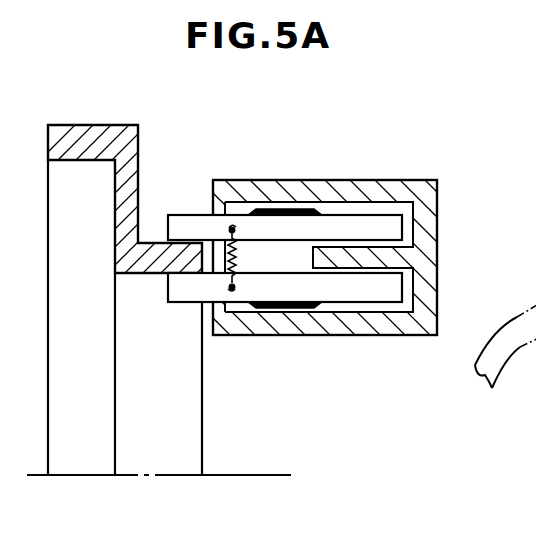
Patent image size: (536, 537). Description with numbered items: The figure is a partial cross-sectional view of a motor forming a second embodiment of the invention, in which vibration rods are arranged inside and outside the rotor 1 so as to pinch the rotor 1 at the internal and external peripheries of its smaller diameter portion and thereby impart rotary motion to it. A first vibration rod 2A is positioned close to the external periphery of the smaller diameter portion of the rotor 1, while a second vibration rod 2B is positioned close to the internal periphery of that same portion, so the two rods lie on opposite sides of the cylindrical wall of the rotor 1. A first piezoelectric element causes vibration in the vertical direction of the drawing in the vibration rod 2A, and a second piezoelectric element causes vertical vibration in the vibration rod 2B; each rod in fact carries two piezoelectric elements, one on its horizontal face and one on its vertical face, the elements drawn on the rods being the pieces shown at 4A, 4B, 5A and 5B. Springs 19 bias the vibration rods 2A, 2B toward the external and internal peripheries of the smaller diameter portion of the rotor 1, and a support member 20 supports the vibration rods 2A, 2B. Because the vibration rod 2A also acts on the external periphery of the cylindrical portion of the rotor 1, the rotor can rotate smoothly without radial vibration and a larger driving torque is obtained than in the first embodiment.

The rotor 1 is at (134, 177).
The first vibration rod 2A is at (190, 220).
The second vibration rod 2B is at (382, 293).
The upper pad 4A is at (290, 212).
The lower pad 4B is at (300, 312).
The upper arm contact portion 5A is at (348, 218).
The lower arm contact portion 5B is at (342, 282).
The springs 19 is at (238, 255).
The support member 20 is at (438, 233).